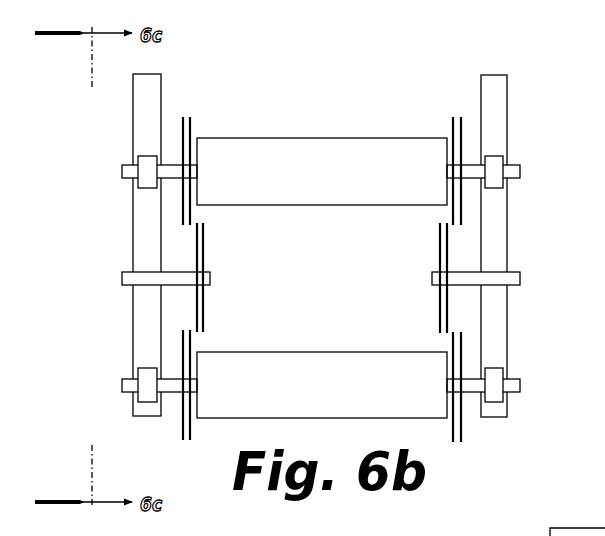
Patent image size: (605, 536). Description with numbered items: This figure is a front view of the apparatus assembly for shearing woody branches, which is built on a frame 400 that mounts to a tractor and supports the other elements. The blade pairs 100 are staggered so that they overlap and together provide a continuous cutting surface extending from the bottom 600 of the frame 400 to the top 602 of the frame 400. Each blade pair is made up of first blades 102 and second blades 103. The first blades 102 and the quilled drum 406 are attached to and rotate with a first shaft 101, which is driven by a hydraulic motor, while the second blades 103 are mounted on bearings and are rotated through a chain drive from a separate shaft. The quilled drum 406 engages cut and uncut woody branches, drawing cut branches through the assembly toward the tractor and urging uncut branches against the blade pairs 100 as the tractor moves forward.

The blade pairs 100 is at (221, 100).
The first shaft 101 is at (122, 171).
The first blades 102 is at (191, 126).
The second blades 103 is at (183, 119).
The frame 400 is at (112, 342).
The quilled drum 406 is at (313, 108).
The bottom of the frame 600 is at (162, 450).
The top of the frame 602 is at (114, 122).